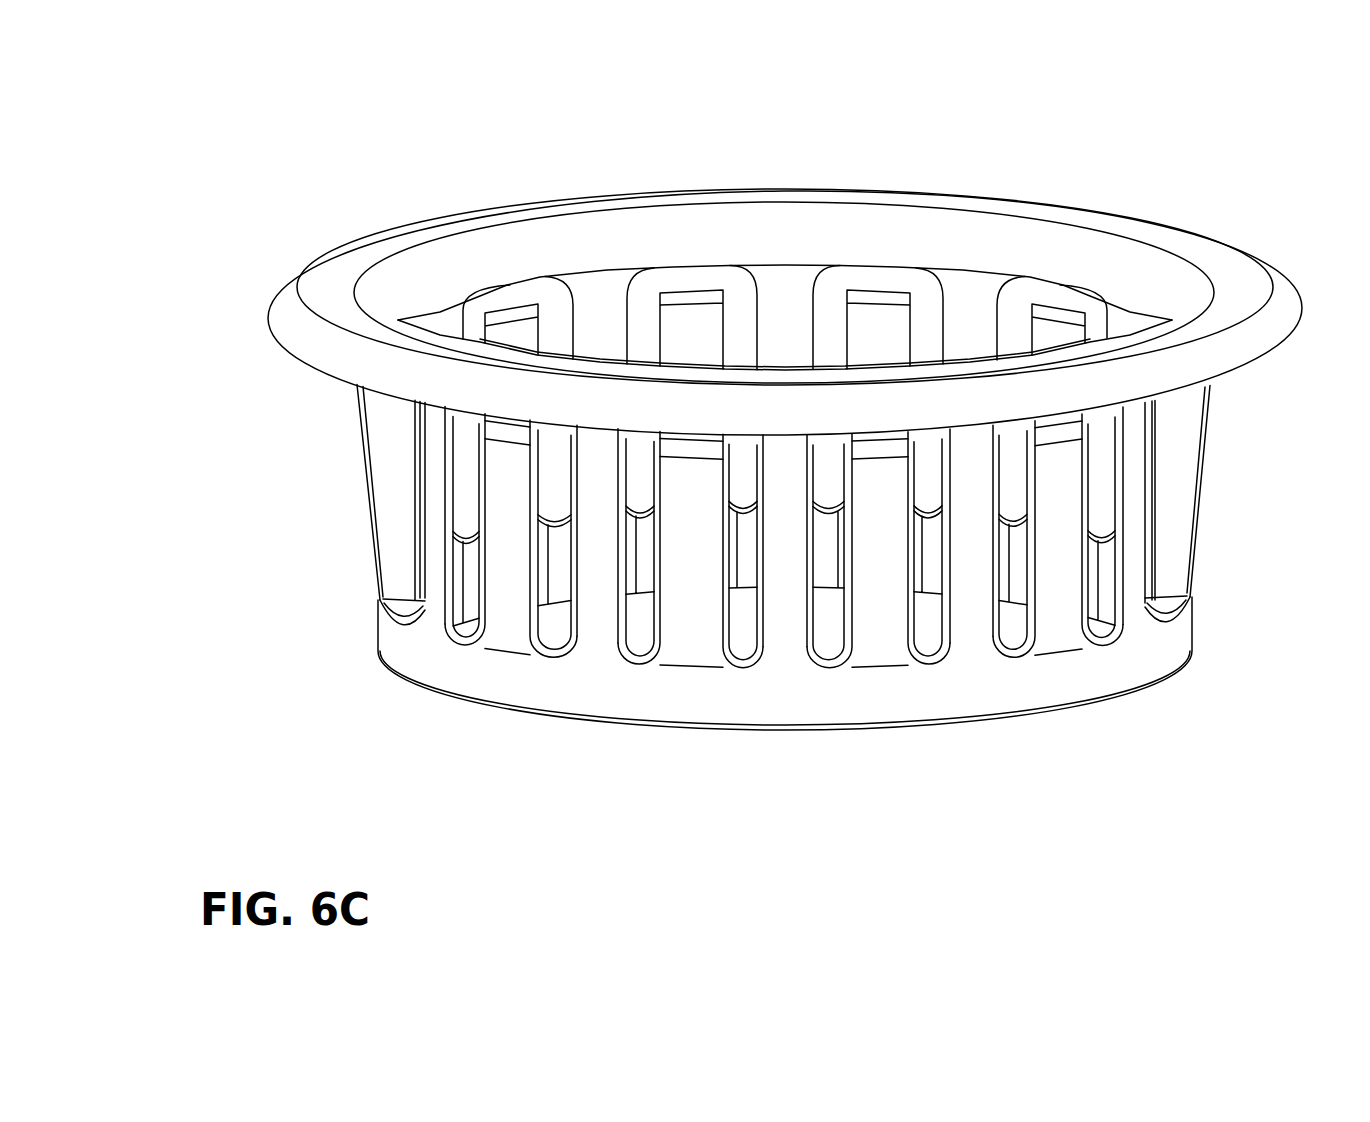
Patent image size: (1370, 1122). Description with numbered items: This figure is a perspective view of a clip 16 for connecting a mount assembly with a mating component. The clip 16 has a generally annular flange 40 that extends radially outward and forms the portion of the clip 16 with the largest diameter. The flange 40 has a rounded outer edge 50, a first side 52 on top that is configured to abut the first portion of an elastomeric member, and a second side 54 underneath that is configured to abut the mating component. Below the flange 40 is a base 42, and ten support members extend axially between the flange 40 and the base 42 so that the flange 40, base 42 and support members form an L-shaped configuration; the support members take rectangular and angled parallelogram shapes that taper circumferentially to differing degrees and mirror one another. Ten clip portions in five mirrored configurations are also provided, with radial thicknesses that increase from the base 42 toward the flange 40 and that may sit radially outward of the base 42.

The clip 16 is at (975, 73).
The flange 40 is at (1221, 210).
The base 42 is at (738, 705).
The outer edge 50 is at (285, 300).
The first side 52 is at (343, 268).
The second side 54 is at (323, 382).